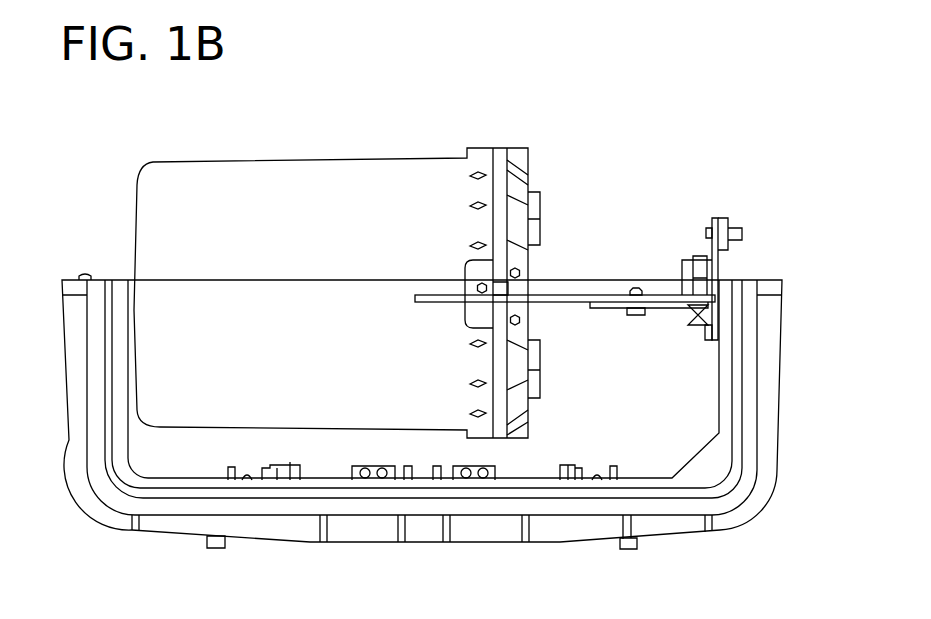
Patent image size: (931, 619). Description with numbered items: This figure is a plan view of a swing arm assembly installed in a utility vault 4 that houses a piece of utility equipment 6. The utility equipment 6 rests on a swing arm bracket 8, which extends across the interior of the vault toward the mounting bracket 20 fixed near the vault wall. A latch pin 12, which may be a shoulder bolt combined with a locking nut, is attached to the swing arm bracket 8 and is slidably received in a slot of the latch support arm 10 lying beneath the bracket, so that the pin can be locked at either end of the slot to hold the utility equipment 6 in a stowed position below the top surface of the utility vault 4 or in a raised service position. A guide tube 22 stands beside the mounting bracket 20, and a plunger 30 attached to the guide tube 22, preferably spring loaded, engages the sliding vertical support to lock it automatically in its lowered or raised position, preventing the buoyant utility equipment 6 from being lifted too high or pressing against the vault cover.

The utility vault 4 is at (777, 398).
The utility equipment 6 is at (318, 312).
The swing arm bracket 8 is at (550, 295).
The latch support arm 10 is at (615, 310).
The latch pin 12 is at (636, 288).
The mounting bracket 20 is at (710, 250).
The guide tube 22 is at (682, 280).
The plunger 30 is at (700, 325).